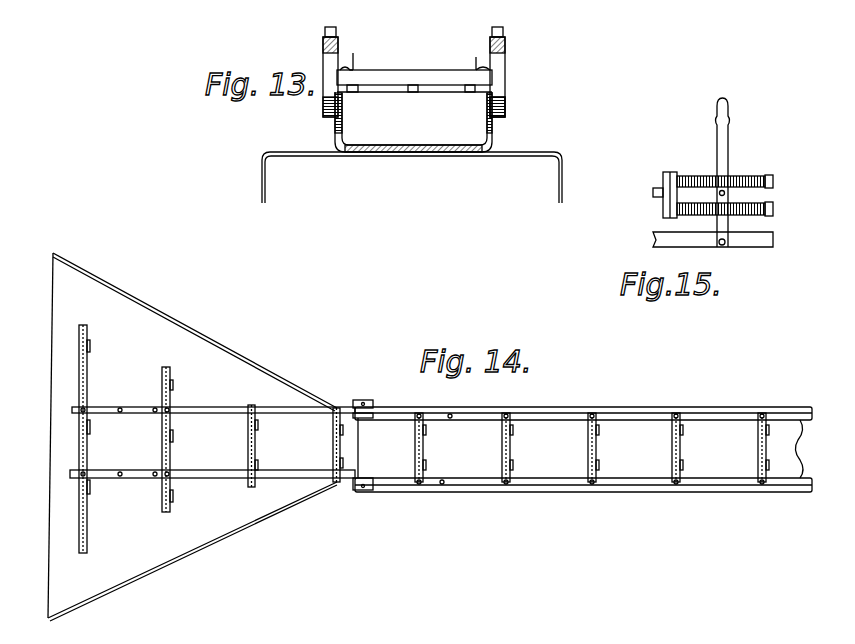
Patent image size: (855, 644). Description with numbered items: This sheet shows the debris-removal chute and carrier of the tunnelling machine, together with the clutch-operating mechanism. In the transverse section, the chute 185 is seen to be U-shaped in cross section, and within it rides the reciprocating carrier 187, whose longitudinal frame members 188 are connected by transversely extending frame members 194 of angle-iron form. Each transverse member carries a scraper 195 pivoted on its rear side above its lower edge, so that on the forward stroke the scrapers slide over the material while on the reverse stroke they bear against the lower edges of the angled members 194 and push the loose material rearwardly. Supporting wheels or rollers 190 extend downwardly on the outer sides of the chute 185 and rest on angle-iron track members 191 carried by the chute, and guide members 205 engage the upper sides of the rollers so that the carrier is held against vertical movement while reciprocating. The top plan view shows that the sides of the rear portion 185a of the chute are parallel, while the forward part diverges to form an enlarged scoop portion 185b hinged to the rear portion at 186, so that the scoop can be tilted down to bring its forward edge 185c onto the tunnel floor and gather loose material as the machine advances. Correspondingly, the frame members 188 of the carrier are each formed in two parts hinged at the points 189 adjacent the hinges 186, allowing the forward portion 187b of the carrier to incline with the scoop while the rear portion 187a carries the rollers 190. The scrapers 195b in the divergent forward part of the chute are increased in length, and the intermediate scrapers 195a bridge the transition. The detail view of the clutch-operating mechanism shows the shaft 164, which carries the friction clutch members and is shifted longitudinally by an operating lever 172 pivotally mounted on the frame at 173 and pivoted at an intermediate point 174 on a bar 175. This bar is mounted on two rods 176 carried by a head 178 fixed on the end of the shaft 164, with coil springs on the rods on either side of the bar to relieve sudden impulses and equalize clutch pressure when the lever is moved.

In FIG. 15, the shaft 164 is at (656, 193).
In FIG. 15, the operating lever 172 is at (729, 140).
In FIG. 15, the pivot 173 is at (728, 247).
In FIG. 15, the intermediate pivot point 174 is at (726, 193).
In FIG. 15, the bar 175 is at (730, 178).
In FIG. 15, the rods 176 is at (697, 176).
In FIG. 15, the head 178 is at (667, 172).
In FIG. 13, the chute 185 is at (335, 133).
In FIG. 14, the rear portion of the chute 185a is at (540, 407).
In FIG. 14, the scoop portion of the chute 185b is at (195, 537).
In FIG. 14, the forward edge of the chute 185c is at (48, 540).
In FIG. 14, the hinge 186 is at (362, 400).
In FIG. 14, the reciprocating carrier 187 is at (298, 412).
In FIG. 14, the rear portion of the carrier 187a is at (615, 420).
In FIG. 14, the forward portion of the carrier 187b is at (192, 407).
In FIG. 13, the frame members 188 is at (362, 59).
In FIG. 14, the frame members 188 is at (450, 418).
In FIG. 14, the hinge points 189 is at (360, 428).
In FIG. 13, the supporting wheels or rollers 190 is at (323, 92).
In FIG. 13, the angle-iron track members 191 is at (506, 115).
In FIG. 13, the transverse frame members 194 is at (376, 78).
In FIG. 14, the transverse frame members 194 is at (247, 440).
In FIG. 13, the scraper 195 is at (440, 128).
In FIG. 14, the cross bar 195a is at (172, 490).
In FIG. 14, the lengthened scrapers 195b is at (90, 505).
In FIG. 13, the guide members 205 is at (506, 47).